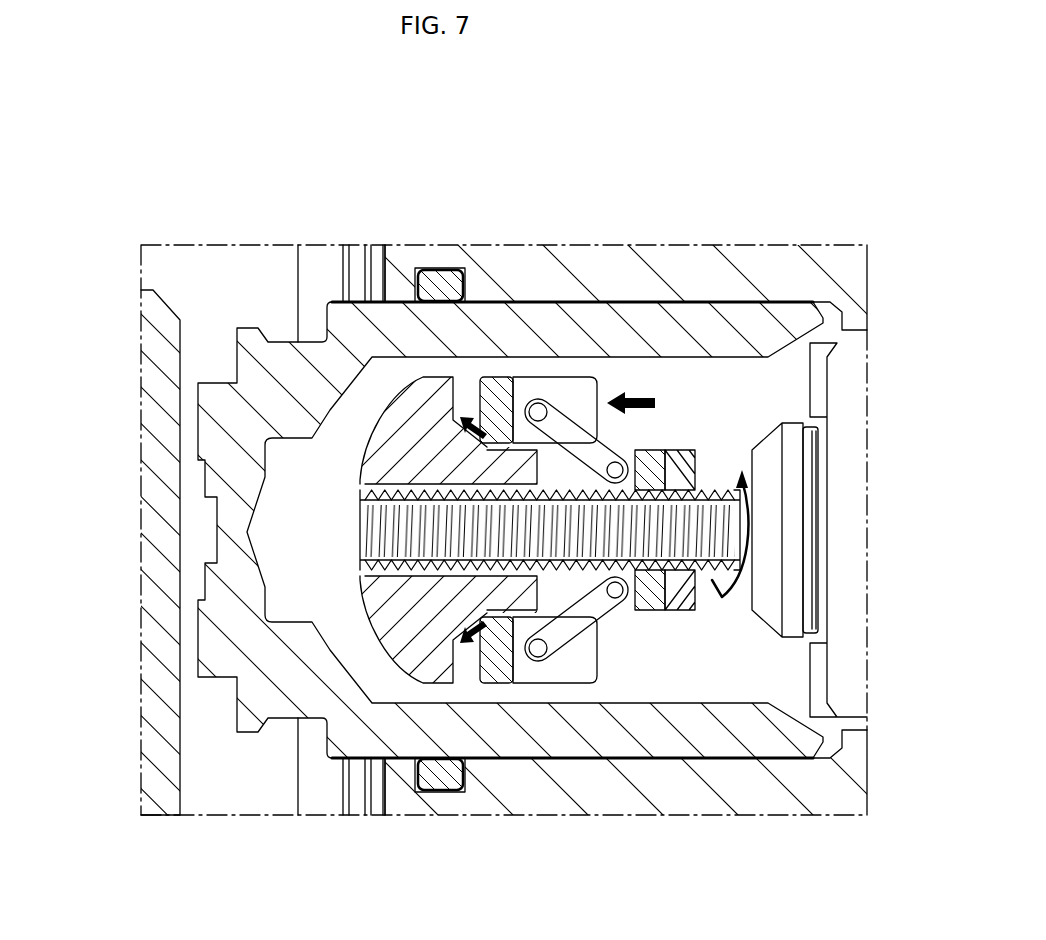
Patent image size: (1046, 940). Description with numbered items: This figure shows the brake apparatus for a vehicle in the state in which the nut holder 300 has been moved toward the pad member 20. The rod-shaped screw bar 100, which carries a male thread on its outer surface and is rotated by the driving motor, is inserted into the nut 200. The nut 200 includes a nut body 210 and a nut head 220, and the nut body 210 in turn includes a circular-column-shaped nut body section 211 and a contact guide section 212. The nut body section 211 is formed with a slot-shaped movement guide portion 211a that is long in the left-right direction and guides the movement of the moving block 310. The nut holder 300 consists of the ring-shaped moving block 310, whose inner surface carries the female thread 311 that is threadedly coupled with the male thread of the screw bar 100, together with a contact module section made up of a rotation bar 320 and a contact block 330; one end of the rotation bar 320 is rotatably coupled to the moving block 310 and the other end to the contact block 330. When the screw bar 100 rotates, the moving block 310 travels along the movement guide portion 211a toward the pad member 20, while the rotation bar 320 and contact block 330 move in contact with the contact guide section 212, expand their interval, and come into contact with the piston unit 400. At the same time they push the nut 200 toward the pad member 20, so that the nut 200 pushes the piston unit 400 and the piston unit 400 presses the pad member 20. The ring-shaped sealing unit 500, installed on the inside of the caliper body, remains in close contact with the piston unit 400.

The pad member 20 is at (157, 605).
The screw bar 100 is at (745, 470).
The nut 200 is at (518, 150).
The nut body 210 is at (520, 197).
The nut body section 211 is at (508, 455).
The movement guide portion 211a is at (650, 462).
The contact guide section 212 is at (467, 420).
The nut head 220 is at (397, 430).
The nut holder 300 is at (725, 862).
The moving block 310 is at (645, 597).
The female thread 311 is at (660, 548).
The rotation bar 320 is at (578, 630).
The contact block 330 is at (497, 673).
The piston unit 400 is at (677, 322).
The sealing unit 500 is at (440, 790).